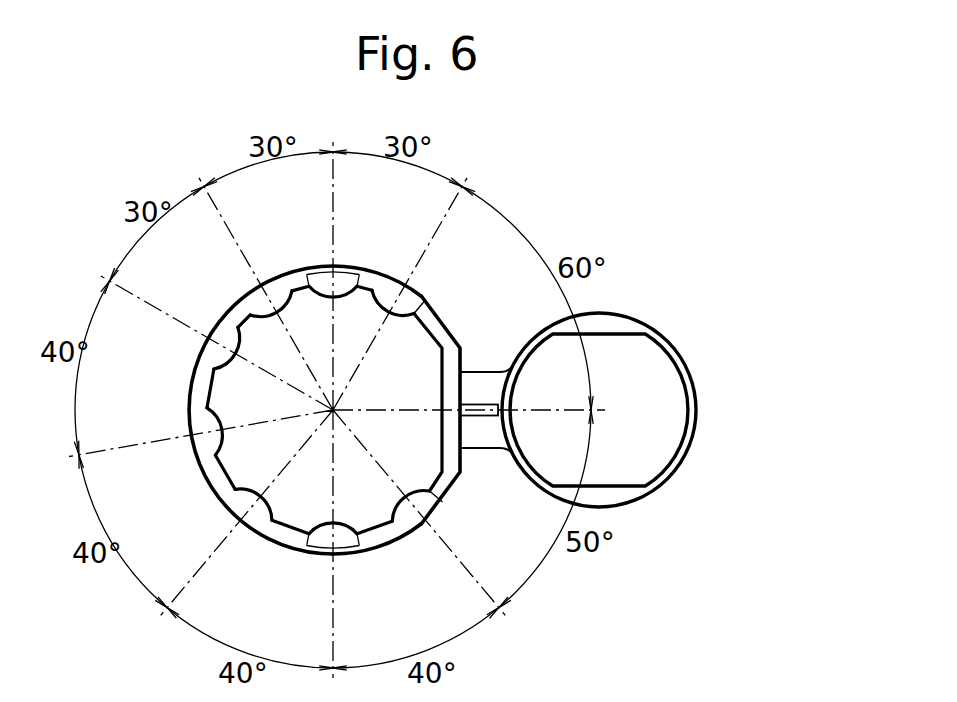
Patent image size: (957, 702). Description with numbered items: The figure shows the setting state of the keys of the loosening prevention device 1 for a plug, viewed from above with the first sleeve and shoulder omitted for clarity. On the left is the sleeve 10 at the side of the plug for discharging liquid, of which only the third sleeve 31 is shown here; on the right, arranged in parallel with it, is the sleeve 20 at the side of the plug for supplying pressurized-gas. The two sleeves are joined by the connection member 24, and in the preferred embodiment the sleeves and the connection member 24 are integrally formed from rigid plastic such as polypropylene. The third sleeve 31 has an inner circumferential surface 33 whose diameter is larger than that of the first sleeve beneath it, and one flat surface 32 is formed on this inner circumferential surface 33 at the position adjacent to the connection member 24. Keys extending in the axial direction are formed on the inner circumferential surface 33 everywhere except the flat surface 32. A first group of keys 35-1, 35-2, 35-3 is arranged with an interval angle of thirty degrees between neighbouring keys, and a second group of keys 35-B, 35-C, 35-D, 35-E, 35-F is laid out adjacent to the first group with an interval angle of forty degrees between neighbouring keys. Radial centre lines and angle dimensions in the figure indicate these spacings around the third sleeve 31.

The loosening prevention device 1 is at (537, 185).
The sleeve at the side of the plug for discharging liquid 10 is at (234, 266).
The sleeve at the side of the plug for supplying pressurized-gas 20 is at (700, 338).
The connection member 24 is at (485, 433).
The third sleeve 31 is at (197, 387).
The flat surface 32 is at (433, 377).
The inner circumferential surface 33 is at (217, 495).
The key 35-1 is at (402, 307).
The key 35-2 is at (335, 290).
The key 35-3 is at (270, 313).
The key 35-B is at (413, 500).
The key 35-C is at (340, 537).
The key 35-D is at (257, 510).
The key 35-E is at (205, 440).
The key 35-F is at (227, 350).